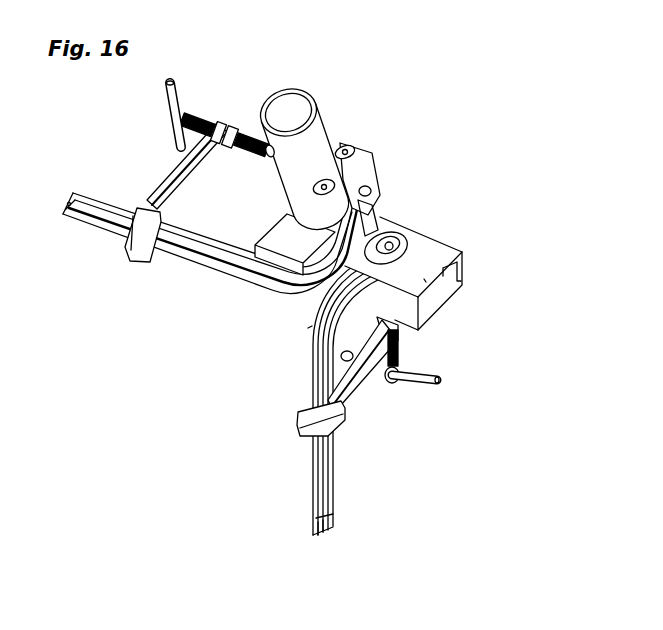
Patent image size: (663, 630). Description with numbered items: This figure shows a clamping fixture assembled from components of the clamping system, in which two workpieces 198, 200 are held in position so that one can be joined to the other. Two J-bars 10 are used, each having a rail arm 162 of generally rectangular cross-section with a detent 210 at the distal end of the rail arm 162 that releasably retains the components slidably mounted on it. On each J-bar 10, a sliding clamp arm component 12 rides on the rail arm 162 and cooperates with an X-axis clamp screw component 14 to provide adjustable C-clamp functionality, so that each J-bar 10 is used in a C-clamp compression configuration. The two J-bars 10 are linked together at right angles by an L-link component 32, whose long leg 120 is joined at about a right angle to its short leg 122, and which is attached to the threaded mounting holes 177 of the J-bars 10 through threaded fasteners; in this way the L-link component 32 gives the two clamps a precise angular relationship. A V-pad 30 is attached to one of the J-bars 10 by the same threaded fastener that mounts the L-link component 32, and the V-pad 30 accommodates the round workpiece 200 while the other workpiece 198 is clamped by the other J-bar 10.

The J-bar clamping component 10 is at (234, 296).
The sliding clamp arm component 12 is at (149, 178).
The X-axis clamp screw component 14 is at (193, 93).
The V-pad 30 is at (362, 128).
The L-link component 32 is at (382, 224).
The long leg 120 is at (367, 237).
The short leg 122 is at (306, 326).
The rail arm 162 is at (320, 450).
The threaded bore 177 is at (392, 247).
The workpiece 198 is at (424, 279).
The workpiece 200 is at (317, 132).
The detent 210 is at (296, 529).